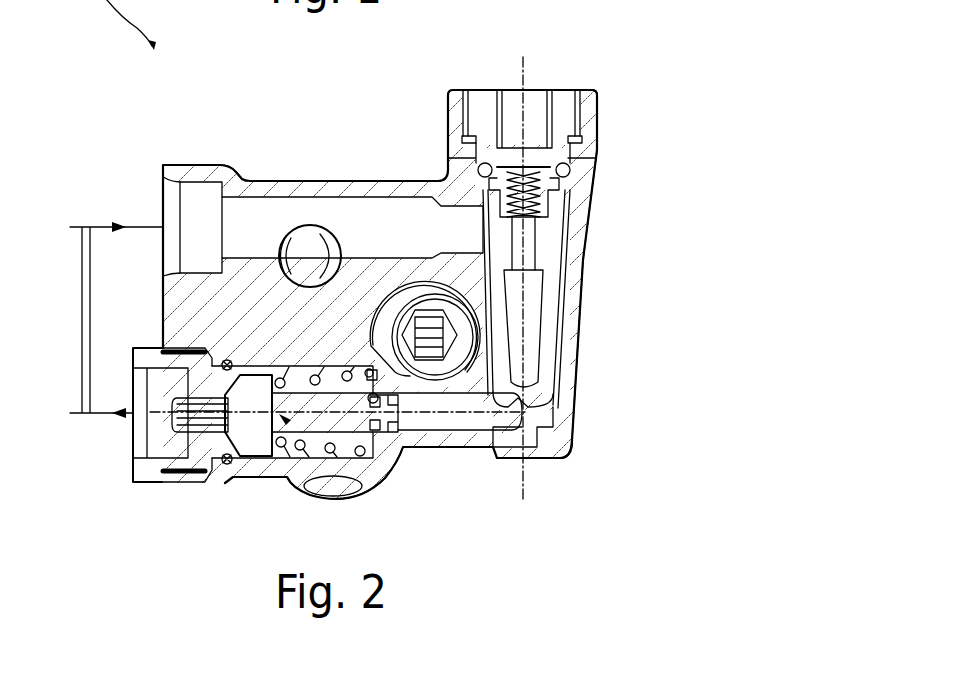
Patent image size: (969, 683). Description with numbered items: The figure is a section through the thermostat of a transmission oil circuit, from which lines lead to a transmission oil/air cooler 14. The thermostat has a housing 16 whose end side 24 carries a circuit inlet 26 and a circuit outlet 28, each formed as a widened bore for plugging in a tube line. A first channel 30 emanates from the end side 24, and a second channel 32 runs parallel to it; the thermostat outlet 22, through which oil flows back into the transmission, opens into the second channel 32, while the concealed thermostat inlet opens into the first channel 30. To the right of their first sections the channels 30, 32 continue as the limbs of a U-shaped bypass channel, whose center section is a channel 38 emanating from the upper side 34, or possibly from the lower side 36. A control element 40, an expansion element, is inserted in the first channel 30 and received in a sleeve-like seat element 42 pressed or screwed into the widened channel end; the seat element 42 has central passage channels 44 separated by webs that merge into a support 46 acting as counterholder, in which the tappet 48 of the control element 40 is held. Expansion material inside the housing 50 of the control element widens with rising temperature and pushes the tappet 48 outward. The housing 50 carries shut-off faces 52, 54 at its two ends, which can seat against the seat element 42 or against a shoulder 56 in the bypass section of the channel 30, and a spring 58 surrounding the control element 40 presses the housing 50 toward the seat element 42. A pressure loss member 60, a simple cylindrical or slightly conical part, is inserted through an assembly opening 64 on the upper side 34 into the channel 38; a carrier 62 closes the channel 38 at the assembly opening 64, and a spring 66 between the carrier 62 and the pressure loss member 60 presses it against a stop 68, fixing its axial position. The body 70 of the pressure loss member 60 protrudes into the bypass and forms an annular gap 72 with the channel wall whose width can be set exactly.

The transmission oil/air cooler 14 is at (80, 436).
The housing 16 is at (446, 434).
The thermostat outlet 22 is at (313, 233).
The end side 24 is at (163, 177).
The circuit inlet 26 is at (168, 442).
The circuit outlet 28 is at (200, 200).
The first channel 30 is at (431, 420).
The second channel 32 is at (375, 215).
The upper side 34 is at (586, 89).
The lower side 36 is at (552, 460).
The channel 38 is at (556, 408).
The control element 40 is at (288, 445).
The seat element 42 is at (202, 435).
The passage channels 44 is at (190, 470).
The support 46 is at (175, 420).
The tappet 48 is at (228, 458).
The housing of the control element 50 is at (350, 435).
The shut-off face 52 is at (235, 352).
The shut-off face 54 is at (397, 456).
The shoulder 56 is at (406, 386).
The spring 58 is at (513, 296).
The pressure loss member 60 is at (552, 236).
The carrier 62 is at (483, 96).
The assembly opening 64 is at (598, 102).
The spring 66 is at (570, 165).
The stop 68 is at (562, 203).
The body 70 is at (556, 350).
The annular gap 72 is at (572, 294).